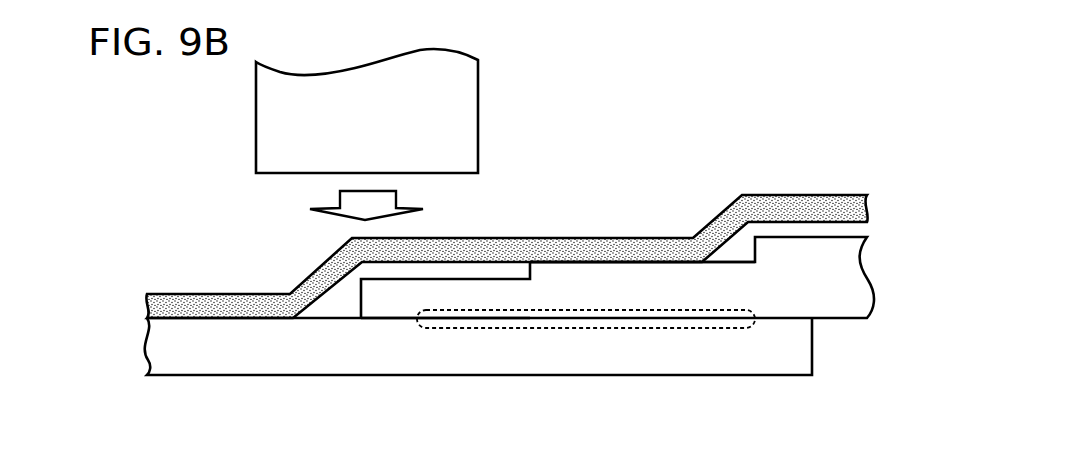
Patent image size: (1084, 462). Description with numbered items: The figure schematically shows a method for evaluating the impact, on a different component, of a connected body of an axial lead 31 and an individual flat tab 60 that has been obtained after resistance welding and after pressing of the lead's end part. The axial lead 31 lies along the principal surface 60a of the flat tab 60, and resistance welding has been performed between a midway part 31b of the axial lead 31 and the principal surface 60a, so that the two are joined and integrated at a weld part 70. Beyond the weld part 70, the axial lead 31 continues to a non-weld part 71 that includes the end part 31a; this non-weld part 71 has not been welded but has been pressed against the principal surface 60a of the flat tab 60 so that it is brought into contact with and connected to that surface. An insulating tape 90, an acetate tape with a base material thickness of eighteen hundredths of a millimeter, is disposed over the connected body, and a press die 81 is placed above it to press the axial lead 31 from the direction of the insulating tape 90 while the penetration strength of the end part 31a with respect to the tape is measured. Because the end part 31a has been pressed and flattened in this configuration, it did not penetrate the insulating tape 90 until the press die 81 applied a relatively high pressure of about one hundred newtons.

The press die 81 is at (463, 113).
The insulating tape 90 is at (320, 272).
The flat tab 60 is at (742, 362).
The principal surface 60a is at (203, 322).
The axial lead 31 is at (841, 321).
The end part 31a is at (357, 297).
The midway part 31b is at (528, 295).
The non-weld part 71 is at (391, 322).
The weld part 70 is at (612, 327).